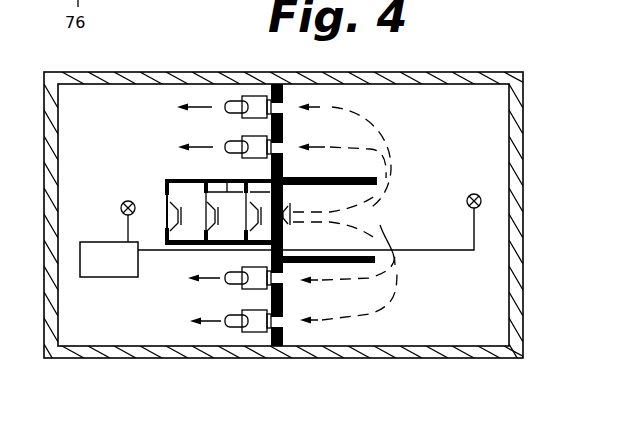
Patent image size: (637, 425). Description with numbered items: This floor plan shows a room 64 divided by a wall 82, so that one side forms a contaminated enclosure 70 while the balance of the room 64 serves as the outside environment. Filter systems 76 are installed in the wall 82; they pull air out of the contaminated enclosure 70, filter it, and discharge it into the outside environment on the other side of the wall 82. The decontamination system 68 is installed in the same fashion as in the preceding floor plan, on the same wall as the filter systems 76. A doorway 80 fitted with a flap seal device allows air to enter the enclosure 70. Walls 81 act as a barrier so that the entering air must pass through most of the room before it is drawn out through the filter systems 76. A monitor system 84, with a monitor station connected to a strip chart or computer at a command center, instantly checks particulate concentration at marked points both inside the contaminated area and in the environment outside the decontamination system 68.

The room 64 is at (353, 75).
The decontamination system 68 is at (170, 180).
The contaminated enclosure 70 is at (487, 153).
The filter systems 76 is at (248, 137).
The doorway 80 is at (292, 228).
The walls 81 is at (352, 196).
The wall 82 is at (285, 173).
The monitor system 84 is at (110, 278).